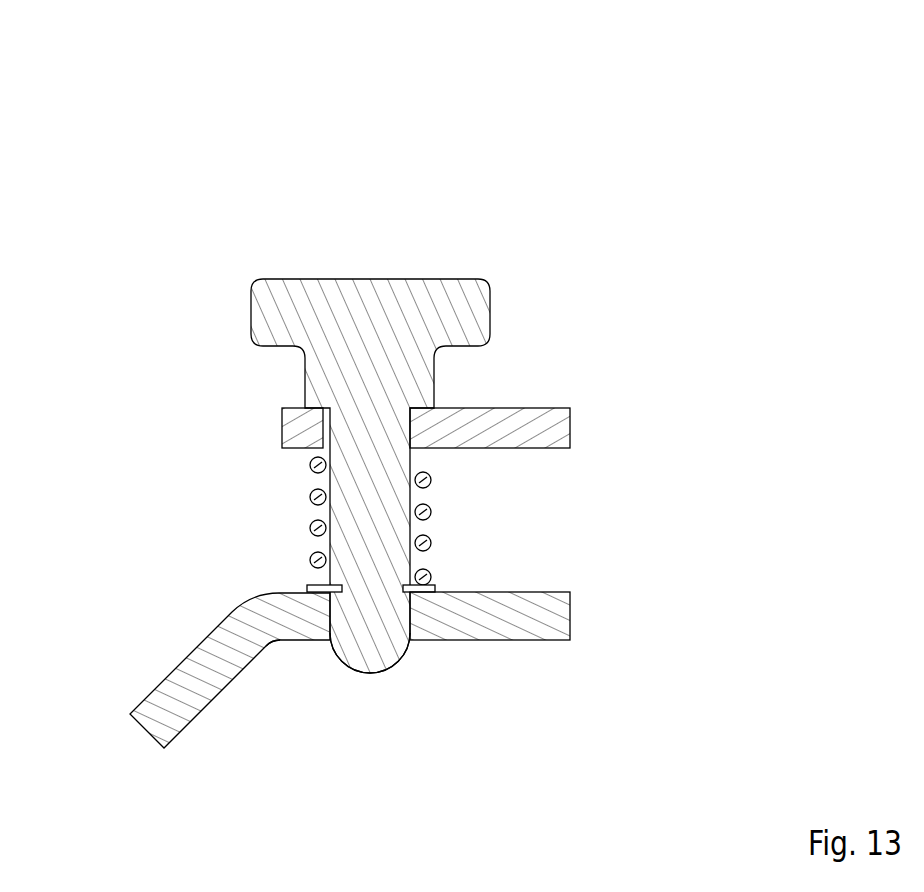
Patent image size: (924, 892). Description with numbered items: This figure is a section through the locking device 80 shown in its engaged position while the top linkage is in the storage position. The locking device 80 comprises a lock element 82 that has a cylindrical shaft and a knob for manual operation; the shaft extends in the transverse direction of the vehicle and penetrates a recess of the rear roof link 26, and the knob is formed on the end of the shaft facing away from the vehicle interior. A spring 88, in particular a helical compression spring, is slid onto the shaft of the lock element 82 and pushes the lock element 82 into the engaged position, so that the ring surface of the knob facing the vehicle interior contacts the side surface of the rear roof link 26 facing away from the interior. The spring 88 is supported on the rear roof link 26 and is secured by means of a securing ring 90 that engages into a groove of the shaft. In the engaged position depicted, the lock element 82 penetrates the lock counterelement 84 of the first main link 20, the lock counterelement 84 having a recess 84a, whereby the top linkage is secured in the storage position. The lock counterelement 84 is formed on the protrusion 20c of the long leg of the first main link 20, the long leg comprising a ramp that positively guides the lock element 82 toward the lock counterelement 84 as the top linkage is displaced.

The locking device 80 is at (421, 421).
The lock element 82 is at (490, 288).
The lock counterelement 84 is at (421, 628).
The recess 84a is at (330, 636).
The rear roof link 26 is at (553, 399).
The spring 88 is at (432, 513).
The securing ring 90 is at (435, 587).
The first main link 20 is at (206, 622).
The protrusion 20c is at (270, 641).